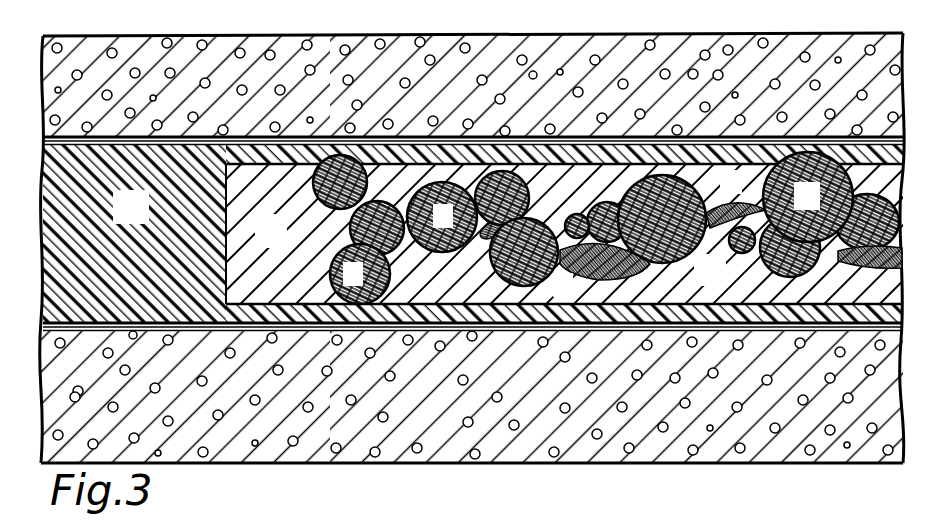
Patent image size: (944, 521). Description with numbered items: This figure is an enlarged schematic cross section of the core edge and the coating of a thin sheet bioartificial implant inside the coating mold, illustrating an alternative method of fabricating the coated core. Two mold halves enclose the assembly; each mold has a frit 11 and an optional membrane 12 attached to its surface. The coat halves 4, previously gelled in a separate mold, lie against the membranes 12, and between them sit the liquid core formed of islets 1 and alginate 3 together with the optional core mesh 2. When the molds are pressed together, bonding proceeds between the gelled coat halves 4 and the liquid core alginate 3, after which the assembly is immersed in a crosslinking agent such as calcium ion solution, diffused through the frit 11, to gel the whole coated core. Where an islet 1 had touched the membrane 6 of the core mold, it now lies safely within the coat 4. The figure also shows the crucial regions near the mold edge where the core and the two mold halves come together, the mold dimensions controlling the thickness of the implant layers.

The islets 1 is at (362, 288).
The core mesh 2 is at (582, 264).
The alginate 3 is at (284, 243).
The coat 4 is at (143, 219).
The membrane 6 is at (819, 209).
The frit 11 is at (452, 93).
The membrane 12 is at (535, 134).